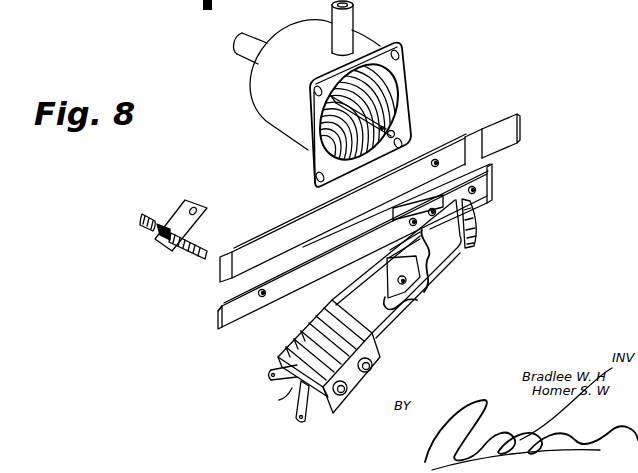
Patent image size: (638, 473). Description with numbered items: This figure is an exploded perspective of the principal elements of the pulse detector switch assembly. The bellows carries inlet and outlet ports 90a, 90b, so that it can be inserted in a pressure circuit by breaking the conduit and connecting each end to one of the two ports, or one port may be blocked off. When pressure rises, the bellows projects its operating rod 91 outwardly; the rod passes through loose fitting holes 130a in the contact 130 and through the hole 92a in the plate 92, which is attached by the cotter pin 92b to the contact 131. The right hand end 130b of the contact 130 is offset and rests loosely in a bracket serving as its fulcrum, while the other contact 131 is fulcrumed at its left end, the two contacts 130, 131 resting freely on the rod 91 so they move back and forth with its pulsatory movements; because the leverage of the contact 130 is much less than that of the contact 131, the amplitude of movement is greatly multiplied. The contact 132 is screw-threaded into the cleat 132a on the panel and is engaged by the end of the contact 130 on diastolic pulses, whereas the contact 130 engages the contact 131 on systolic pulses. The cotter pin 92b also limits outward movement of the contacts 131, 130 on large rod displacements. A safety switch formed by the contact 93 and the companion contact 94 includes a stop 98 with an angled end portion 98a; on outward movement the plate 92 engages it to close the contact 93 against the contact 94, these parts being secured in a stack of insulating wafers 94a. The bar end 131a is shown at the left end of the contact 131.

The inlet port 90a is at (236, 48).
The outlet port 90b is at (346, 23).
The bellows rod 91 is at (395, 132).
The plate 92 is at (484, 178).
The hole in plate 92a is at (476, 189).
The cotter pin 92b is at (430, 209).
The contact 93 is at (420, 258).
The companion contact 94 is at (408, 297).
The stack of insulating wafers 94a is at (290, 392).
The stop 98 is at (387, 327).
The angled end portion 98a is at (477, 237).
The contact 130 is at (294, 221).
The loose fitting holes 130a is at (438, 159).
The right hand end 130b is at (520, 128).
The contact 131 is at (235, 322).
The bar end 131a is at (216, 316).
The contact 132 is at (188, 258).
The cleat 132a is at (207, 202).